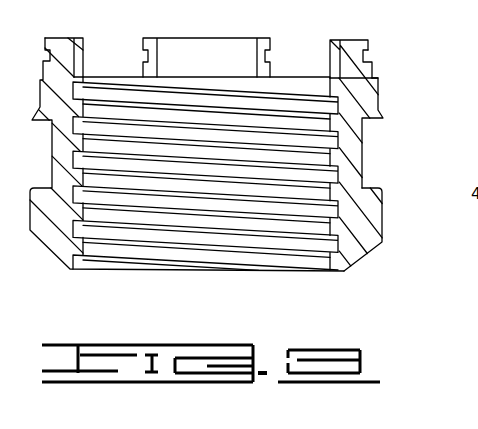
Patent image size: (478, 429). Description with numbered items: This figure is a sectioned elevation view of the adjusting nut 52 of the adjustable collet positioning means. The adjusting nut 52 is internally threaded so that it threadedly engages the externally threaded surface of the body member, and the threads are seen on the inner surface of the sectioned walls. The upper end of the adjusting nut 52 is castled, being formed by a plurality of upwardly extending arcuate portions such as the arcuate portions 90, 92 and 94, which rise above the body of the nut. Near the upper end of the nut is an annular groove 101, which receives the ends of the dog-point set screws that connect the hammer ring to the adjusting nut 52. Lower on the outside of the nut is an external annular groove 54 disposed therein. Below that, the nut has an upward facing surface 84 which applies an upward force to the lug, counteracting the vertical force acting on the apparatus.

The adjusting nut 52 is at (412, 50).
The upwardly extending arcuate portion 90 is at (80, 48).
The upwardly extending arcuate portion 92 is at (223, 39).
The upwardly extending arcuate portion 94 is at (350, 47).
The annular groove 101 is at (368, 58).
The external annular groove 54 is at (362, 146).
The upward facing surface 84 is at (372, 188).